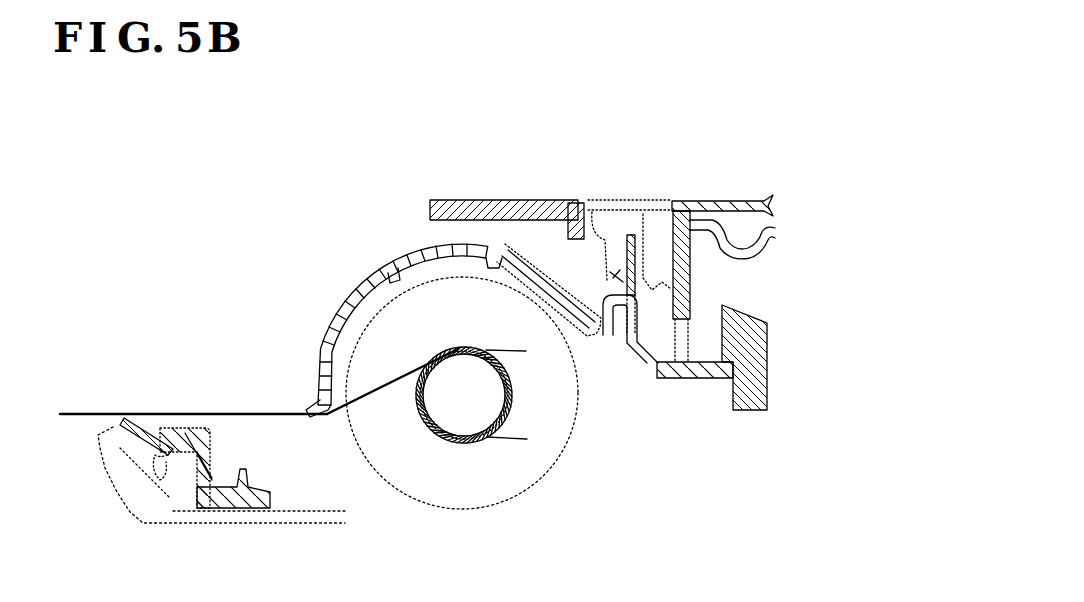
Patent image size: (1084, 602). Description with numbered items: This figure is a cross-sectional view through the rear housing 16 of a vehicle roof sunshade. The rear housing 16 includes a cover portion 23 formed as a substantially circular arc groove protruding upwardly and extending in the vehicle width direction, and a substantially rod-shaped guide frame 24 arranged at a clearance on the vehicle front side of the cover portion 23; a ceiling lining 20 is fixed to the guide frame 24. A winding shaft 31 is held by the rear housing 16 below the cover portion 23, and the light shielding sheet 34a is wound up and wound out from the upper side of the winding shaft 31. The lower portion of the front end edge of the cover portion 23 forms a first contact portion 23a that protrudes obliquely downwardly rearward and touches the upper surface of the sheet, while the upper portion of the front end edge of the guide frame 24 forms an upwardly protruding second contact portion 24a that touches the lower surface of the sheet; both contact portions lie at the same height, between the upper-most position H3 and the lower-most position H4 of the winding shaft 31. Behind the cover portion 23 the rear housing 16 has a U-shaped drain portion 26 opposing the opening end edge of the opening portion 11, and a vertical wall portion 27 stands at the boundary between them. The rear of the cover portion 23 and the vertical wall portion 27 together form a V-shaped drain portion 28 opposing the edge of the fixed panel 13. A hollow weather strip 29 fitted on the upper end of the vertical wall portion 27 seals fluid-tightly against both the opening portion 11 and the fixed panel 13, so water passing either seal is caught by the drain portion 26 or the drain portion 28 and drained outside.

The opening portion 11 is at (670, 207).
The fixed panel 13 is at (523, 199).
The rear housing 16 is at (688, 382).
The ceiling lining 20 is at (190, 528).
The cover portion 23 is at (337, 307).
The first contact portion 23a is at (322, 422).
The guide frame 24 is at (219, 478).
The second contact portion 24a is at (137, 417).
The drain portion 26 is at (699, 356).
The vertical wall portion 27 is at (622, 334).
The drain portion 28 is at (565, 274).
The weather strip 29 is at (605, 202).
The winding shaft 31 is at (458, 364).
The sheet leading portion 34a is at (207, 411).
The upper-most position H3 is at (522, 354).
The lower-most position H4 is at (523, 439).